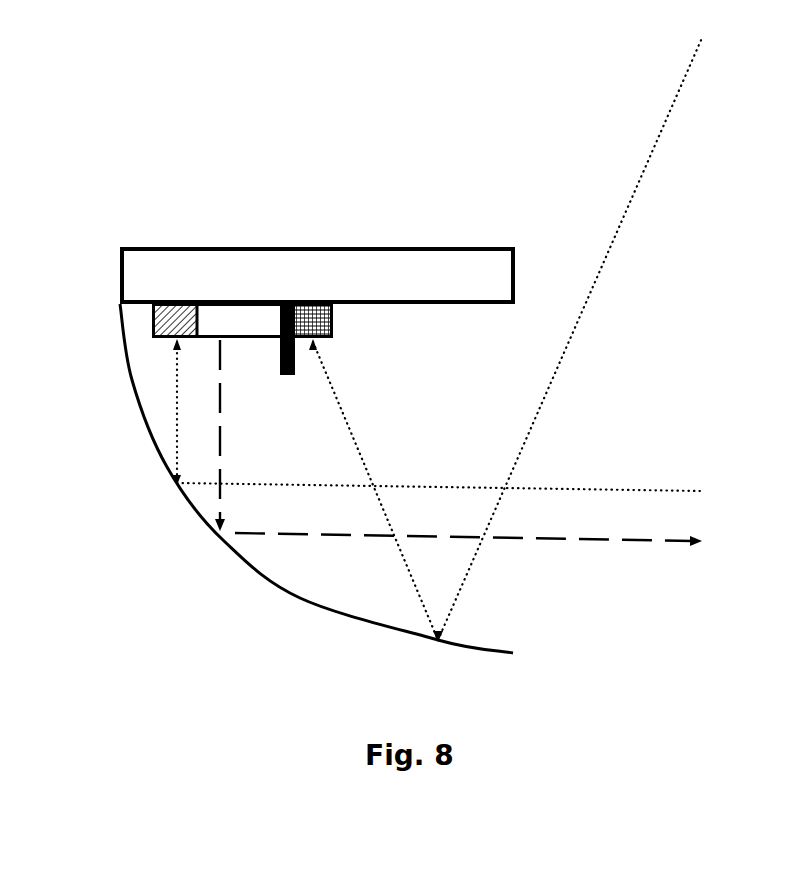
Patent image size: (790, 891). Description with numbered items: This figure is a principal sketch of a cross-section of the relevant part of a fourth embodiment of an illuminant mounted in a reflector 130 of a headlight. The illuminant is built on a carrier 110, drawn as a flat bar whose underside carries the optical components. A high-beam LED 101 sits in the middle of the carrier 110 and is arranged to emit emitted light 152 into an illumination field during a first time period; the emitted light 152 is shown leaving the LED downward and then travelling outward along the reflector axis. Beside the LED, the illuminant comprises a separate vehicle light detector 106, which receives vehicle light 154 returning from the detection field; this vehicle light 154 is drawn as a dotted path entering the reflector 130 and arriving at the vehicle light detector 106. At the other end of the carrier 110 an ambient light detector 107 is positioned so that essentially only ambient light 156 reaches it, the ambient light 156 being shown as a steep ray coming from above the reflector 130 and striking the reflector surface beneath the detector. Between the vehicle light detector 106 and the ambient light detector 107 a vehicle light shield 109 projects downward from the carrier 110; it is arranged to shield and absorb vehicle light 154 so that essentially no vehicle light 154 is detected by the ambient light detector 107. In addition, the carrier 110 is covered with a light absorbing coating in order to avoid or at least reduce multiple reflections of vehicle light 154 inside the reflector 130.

The high-beam LED 101 is at (242, 313).
The vehicle light detector 106 is at (153, 325).
The ambient light detector 107 is at (334, 330).
The vehicle light shield 109 is at (295, 365).
The carrier 110 is at (423, 258).
The reflector 130 is at (163, 468).
The emitted light 152 is at (222, 427).
The vehicle light 154 is at (583, 490).
The ambient light 156 is at (607, 262).